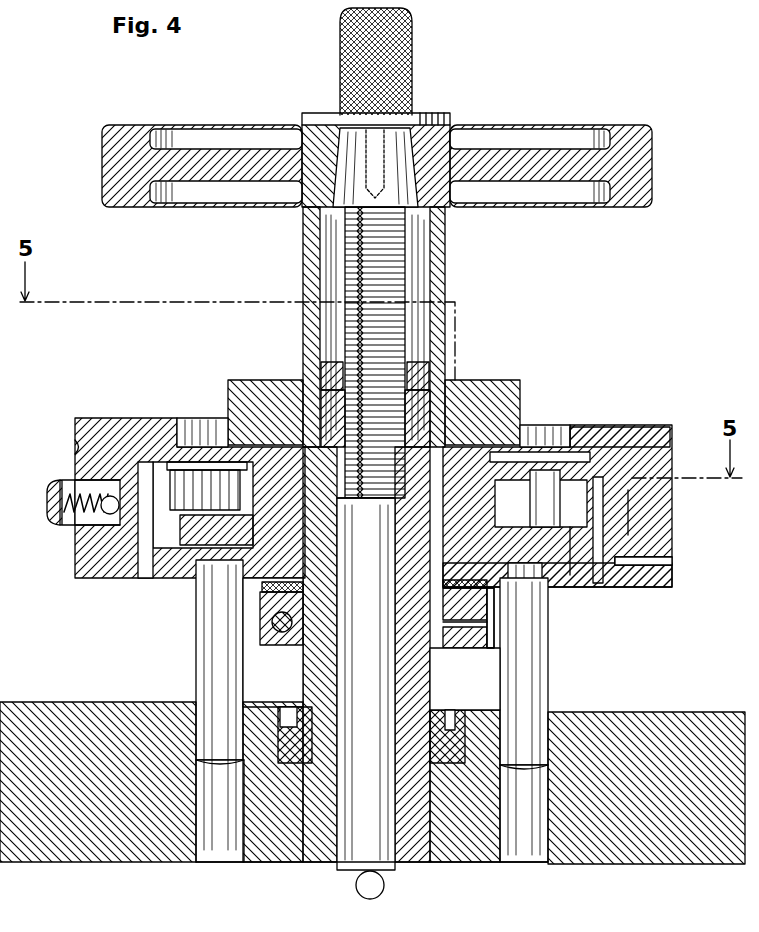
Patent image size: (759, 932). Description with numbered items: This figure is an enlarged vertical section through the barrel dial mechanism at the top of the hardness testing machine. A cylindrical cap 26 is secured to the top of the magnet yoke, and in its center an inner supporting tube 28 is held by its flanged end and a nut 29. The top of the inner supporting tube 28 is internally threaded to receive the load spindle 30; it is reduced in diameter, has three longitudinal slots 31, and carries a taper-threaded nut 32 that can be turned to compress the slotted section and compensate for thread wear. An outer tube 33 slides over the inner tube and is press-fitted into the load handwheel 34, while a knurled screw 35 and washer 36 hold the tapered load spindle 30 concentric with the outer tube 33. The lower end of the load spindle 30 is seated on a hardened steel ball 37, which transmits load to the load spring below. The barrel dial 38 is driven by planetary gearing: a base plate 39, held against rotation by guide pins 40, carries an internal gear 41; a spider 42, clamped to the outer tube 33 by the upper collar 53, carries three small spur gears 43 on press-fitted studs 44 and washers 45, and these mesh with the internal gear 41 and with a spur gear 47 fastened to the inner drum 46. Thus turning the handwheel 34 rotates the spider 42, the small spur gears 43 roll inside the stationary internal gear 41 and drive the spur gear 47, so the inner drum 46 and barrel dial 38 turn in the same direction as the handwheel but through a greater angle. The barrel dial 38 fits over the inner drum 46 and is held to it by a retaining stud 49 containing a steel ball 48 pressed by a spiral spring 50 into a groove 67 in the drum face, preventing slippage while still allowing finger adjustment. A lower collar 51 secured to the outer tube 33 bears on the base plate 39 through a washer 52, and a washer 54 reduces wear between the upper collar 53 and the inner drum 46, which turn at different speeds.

The cylindrical cap 26 is at (640, 712).
The inner supporting tube 28 is at (430, 680).
The nut 29 is at (445, 710).
The load spindle 30 is at (405, 250).
The longitudinal slots 31 is at (370, 450).
The nut 32 is at (429, 380).
The outer tube 33 is at (445, 283).
The load handwheel 34 is at (652, 160).
The knurled screw 35 is at (413, 63).
The washer 36 is at (432, 113).
The hardened steel ball 37 is at (384, 886).
The barrel dial 38 is at (75, 452).
The base plate 39 is at (600, 587).
The guide pins 40 is at (196, 662).
The internal gear 41 is at (641, 465).
The spider 42 is at (560, 540).
The small spur gears 43 is at (587, 470).
The press-fitted studs 44 is at (545, 498).
The washers 45 is at (578, 560).
The inner drum 46 is at (148, 447).
The spur gear 47 is at (598, 477).
The steel ball 48 is at (104, 510).
The retaining stud 49 is at (47, 510).
The spiral spring 50 is at (75, 520).
The lower collar 51 is at (462, 649).
The washer 52 is at (481, 632).
The upper collar 53 is at (505, 380).
The washer 54 is at (515, 462).
The groove 67 is at (630, 512).